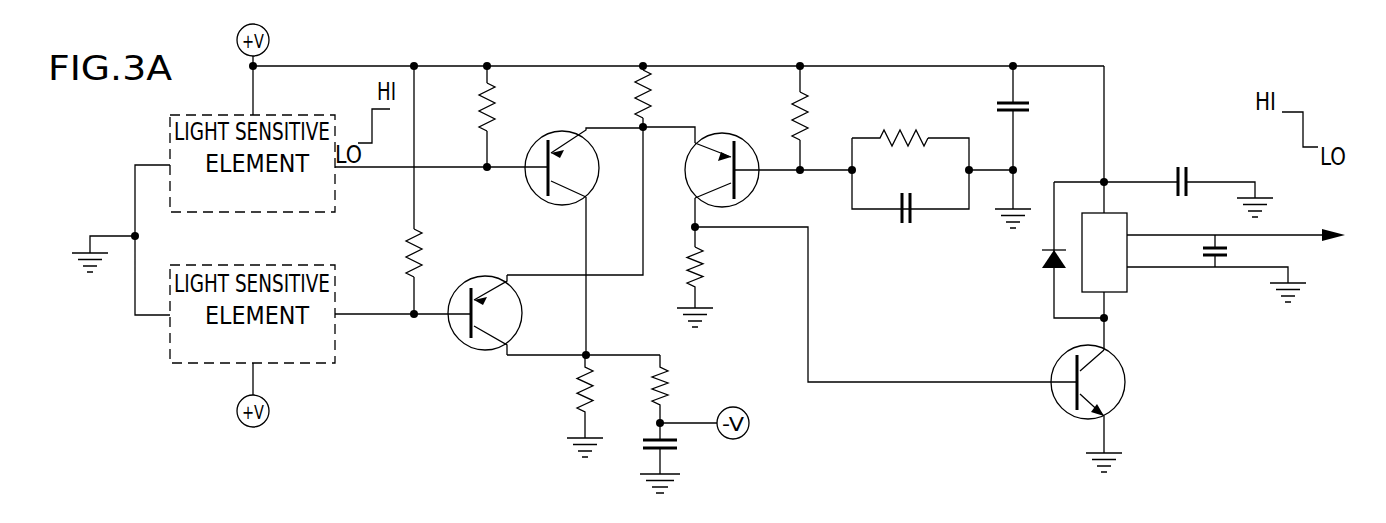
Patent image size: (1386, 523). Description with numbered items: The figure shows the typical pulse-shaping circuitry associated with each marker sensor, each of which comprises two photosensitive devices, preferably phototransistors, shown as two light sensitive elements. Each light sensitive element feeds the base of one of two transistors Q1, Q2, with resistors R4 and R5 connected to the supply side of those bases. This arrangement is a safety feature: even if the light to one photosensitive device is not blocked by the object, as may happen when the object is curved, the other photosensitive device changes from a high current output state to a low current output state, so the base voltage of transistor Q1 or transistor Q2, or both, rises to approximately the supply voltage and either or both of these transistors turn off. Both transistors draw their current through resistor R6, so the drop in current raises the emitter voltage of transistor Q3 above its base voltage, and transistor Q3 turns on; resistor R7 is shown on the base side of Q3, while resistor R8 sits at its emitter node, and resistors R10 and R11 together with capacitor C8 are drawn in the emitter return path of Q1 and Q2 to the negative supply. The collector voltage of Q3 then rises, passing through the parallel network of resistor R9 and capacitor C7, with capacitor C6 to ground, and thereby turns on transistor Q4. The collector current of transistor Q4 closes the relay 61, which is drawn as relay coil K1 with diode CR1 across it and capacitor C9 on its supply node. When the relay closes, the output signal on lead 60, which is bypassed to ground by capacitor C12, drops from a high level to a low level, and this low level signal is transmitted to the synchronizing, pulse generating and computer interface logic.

The resistor R4 is at (483, 106).
The resistor R5 is at (416, 233).
The resistor R6 is at (649, 88).
The resistor R7 is at (808, 112).
The resistor R8 is at (705, 250).
The resistor R9 is at (914, 131).
The resistor R10 is at (579, 389).
The resistor R11 is at (670, 392).
The capacitor C6 is at (1029, 106).
The capacitor C7 is at (900, 225).
The capacitor C8 is at (676, 452).
The capacitor C9 is at (1176, 167).
The capacitor C12 is at (1208, 258).
The transistor Q1 is at (552, 134).
The transistor Q2 is at (475, 350).
The transistor Q3 is at (742, 138).
The transistor Q4 is at (1122, 382).
The relay K1 is at (1104, 252).
The diode CR1 is at (1040, 263).
The lead 60 is at (1303, 233).
The relay 61 is at (1128, 226).